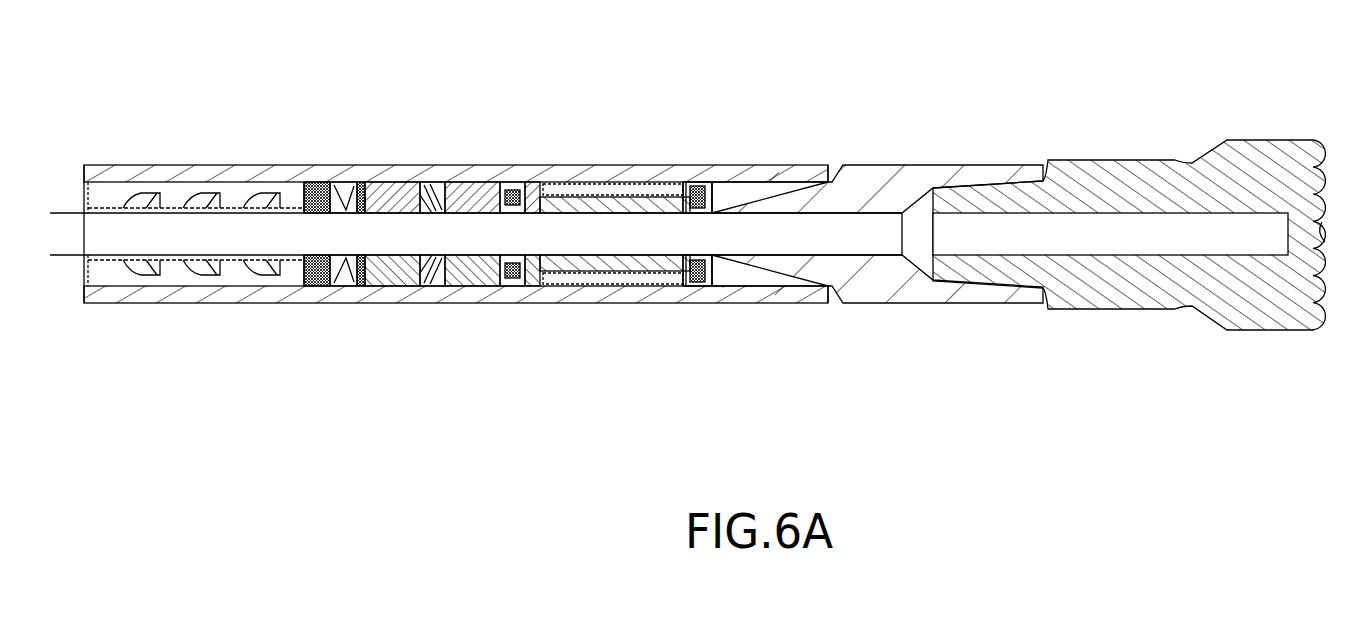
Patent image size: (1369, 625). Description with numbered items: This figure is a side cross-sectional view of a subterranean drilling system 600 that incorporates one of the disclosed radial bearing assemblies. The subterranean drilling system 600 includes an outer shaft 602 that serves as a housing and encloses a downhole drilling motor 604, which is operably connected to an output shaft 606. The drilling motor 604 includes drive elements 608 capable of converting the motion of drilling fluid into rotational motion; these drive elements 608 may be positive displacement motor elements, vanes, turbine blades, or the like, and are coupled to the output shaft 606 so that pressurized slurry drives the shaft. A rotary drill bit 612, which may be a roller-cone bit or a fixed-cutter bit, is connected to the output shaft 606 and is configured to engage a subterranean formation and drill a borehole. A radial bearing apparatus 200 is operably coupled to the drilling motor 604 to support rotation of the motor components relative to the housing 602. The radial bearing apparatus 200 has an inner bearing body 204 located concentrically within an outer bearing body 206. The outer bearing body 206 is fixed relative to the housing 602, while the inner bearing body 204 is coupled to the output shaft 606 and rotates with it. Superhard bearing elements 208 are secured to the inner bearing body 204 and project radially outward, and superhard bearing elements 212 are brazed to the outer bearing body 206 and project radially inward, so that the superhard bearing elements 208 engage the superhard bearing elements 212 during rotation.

The subterranean drilling system 600 is at (838, 81).
The outer shaft 602 is at (437, 187).
The downhole drilling motor 604 is at (212, 178).
The output shaft 606 is at (790, 195).
The drive elements 608 is at (147, 205).
The rotary drill bit 612 is at (1112, 176).
The radial bearing apparatus 200 is at (716, 194).
The inner bearing body 204 is at (693, 207).
The outer bearing body 206 is at (697, 185).
The superhard bearing elements 208 is at (716, 203).
The superhard bearing elements 212 is at (708, 190).